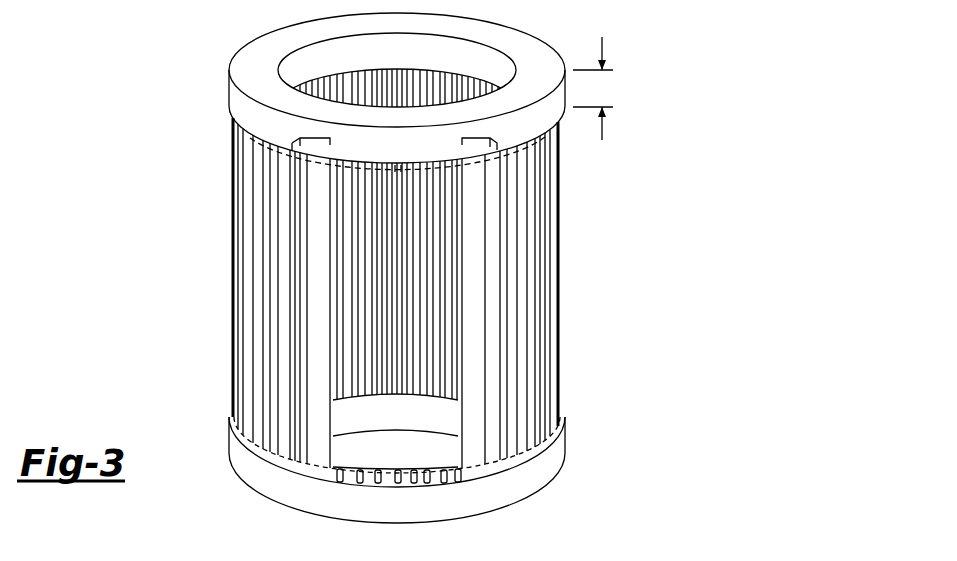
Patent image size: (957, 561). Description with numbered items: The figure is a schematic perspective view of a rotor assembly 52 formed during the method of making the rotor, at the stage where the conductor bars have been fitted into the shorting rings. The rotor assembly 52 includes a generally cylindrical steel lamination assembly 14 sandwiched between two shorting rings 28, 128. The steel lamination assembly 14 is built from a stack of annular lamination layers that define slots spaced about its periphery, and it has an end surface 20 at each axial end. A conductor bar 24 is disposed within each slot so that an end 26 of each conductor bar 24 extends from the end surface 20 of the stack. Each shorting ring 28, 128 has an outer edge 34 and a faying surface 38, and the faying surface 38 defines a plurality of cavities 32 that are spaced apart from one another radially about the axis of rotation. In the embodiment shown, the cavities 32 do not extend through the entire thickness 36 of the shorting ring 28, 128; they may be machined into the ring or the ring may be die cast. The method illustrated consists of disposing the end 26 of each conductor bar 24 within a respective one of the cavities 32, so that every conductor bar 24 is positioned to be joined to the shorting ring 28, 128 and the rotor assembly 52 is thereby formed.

The rotor assembly 52 is at (132, 212).
The shorting ring 28 is at (360, 91).
The shorting ring 128 is at (250, 492).
The outer edge 34 is at (499, 110).
The thickness 36 is at (593, 88).
The end 26 is at (325, 140).
The steel lamination assembly 14 is at (568, 283).
The end surface 20 is at (455, 166).
The conductor bar 24 is at (330, 409).
The cavities 32 is at (385, 462).
The faying surface 38 is at (398, 168).